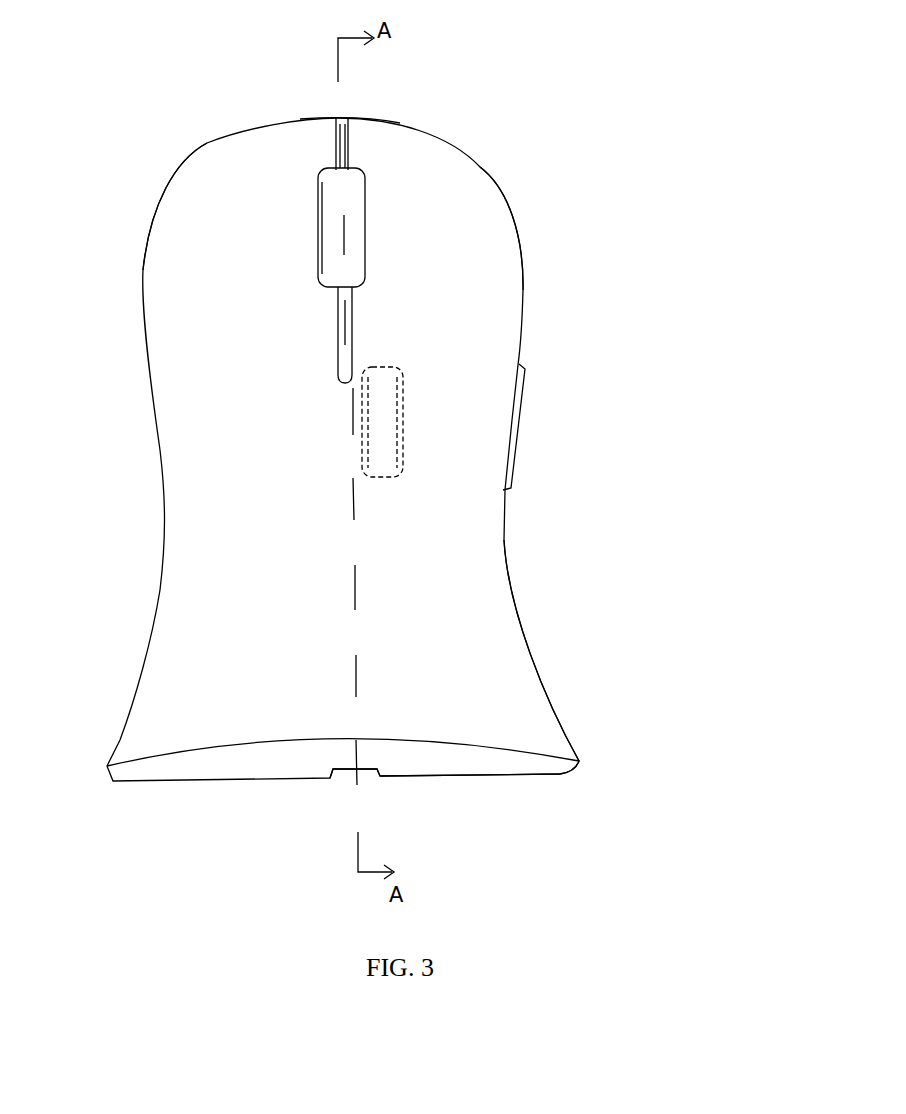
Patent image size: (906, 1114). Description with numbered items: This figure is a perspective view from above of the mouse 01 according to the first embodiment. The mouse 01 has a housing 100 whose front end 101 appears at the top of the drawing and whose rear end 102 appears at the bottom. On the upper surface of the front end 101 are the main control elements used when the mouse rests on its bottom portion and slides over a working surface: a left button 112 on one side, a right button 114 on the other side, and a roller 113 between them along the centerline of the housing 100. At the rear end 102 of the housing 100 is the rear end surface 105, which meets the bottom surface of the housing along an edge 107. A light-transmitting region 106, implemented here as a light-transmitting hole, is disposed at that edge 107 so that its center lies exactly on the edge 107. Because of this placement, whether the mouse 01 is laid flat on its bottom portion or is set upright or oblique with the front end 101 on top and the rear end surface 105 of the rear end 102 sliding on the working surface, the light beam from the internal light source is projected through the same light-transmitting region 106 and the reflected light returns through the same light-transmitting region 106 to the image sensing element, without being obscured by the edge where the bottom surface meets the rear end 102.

The mouse 01 is at (628, 383).
The housing 100 is at (190, 513).
The front end 101 is at (420, 148).
The rear end 102 is at (517, 710).
The rear end surface 105 is at (440, 760).
The light-transmitting region 106 is at (350, 777).
The edge 107 is at (505, 773).
The left button 112 is at (207, 208).
The roller 113 is at (332, 252).
The right button 114 is at (483, 210).